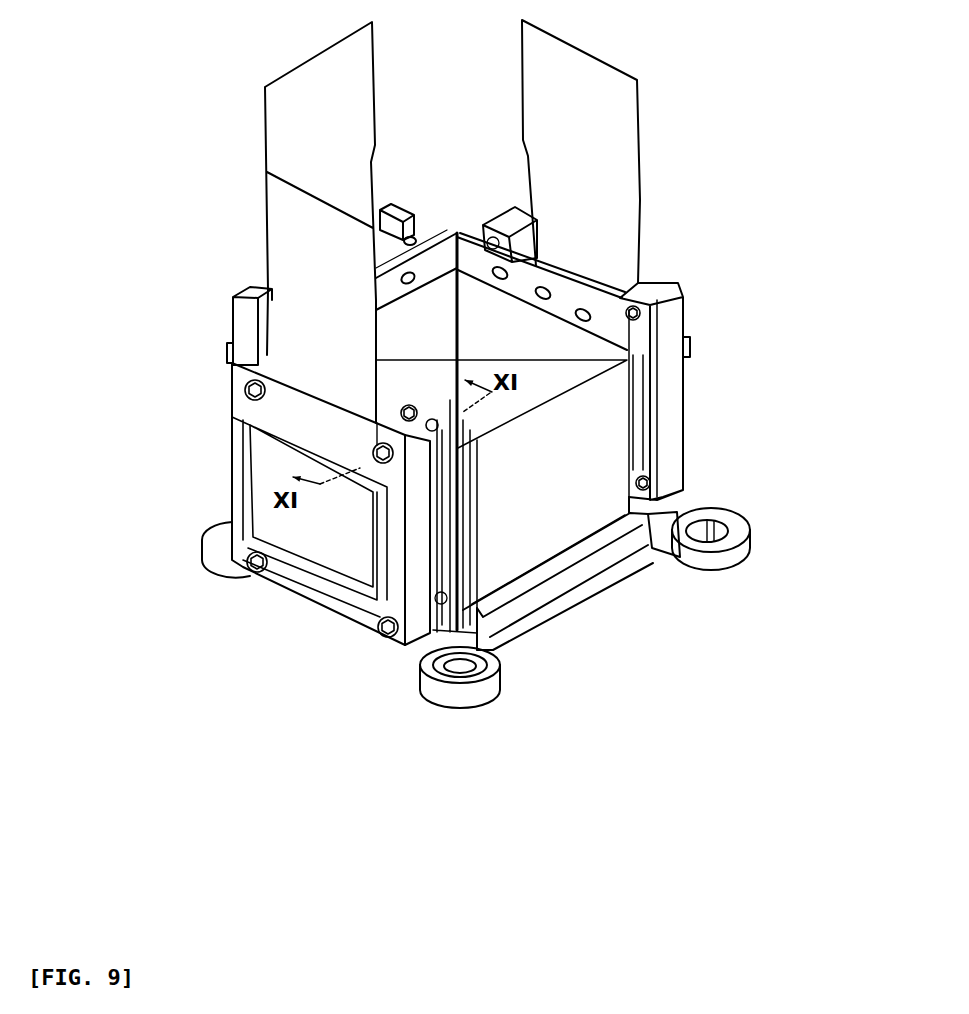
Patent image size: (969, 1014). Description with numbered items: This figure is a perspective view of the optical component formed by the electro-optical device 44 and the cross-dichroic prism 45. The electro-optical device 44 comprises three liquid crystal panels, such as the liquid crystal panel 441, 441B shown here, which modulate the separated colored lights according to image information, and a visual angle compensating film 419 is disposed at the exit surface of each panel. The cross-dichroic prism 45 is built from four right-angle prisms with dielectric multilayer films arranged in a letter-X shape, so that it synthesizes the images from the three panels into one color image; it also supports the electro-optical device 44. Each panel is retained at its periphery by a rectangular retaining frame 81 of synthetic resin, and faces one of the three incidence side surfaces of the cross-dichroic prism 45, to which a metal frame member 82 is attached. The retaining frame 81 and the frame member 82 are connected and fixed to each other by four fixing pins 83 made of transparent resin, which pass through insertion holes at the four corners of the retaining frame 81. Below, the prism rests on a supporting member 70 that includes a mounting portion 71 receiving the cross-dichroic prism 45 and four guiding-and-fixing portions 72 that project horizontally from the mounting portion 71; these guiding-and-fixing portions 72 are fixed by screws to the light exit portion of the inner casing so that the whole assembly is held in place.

The electro-optical device 44 is at (213, 268).
The liquid crystal panel 441 is at (321, 526).
The liquid crystal panel 441B is at (321, 536).
The cross-dichroic prism 45 is at (586, 505).
The supporting member 70 is at (588, 610).
The mounting portion 71 is at (507, 592).
The guiding-and-fixing portion 72 is at (733, 559).
The retaining frame 81 is at (263, 366).
The frame member 82 is at (395, 292).
The fixing pin 83 is at (474, 235).
The visual angle compensating film 419 is at (647, 420).